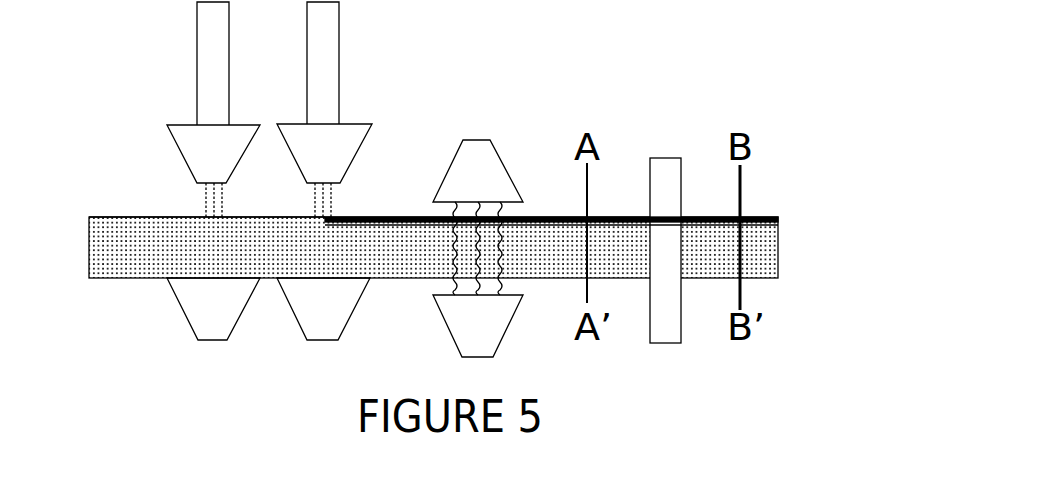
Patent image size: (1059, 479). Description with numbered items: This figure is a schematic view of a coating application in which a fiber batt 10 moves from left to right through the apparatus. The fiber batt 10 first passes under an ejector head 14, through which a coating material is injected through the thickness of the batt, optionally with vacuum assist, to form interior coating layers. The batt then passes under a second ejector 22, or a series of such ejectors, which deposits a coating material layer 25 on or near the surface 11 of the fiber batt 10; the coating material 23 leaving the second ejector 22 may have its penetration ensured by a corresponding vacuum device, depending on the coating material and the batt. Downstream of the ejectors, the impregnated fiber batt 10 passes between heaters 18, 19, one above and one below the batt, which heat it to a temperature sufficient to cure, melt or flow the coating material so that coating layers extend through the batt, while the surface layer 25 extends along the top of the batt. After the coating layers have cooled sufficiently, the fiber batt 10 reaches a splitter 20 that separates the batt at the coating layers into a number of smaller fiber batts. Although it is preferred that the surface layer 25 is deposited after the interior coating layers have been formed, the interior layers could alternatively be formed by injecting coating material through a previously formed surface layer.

The fiber batt 10 is at (115, 243).
The surface 11 is at (164, 207).
The ejector head 14 is at (159, 121).
The second ejector 22 is at (384, 123).
The coating material 23 is at (344, 197).
The heater 18 is at (519, 167).
The heater 19 is at (433, 315).
The splitter 20 is at (690, 182).
The coating material layer 25 is at (791, 220).